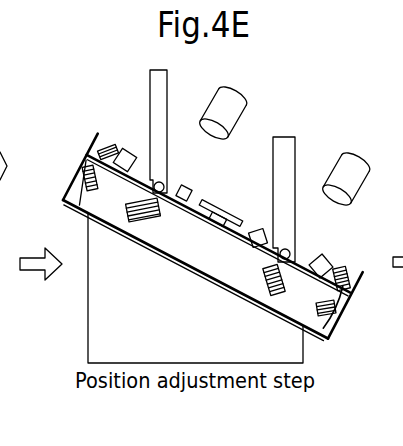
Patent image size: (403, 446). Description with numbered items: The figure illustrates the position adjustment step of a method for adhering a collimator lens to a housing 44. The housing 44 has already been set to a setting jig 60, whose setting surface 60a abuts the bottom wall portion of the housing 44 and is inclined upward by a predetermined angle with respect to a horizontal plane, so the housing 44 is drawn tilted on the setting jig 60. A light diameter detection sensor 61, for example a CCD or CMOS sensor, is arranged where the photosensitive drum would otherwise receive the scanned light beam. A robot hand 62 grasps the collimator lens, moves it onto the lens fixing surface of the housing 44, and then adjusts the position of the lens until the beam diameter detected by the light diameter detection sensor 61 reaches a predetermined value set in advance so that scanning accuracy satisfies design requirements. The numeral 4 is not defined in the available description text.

The electronic component 4 is at (0, 237).
The housing 44 is at (0, 288).
The setting jig 60 is at (87, 345).
The setting surface 60a is at (0, 323).
The light diameter detection sensor 61 is at (243, 88).
The robot hand 62 is at (149, 95).